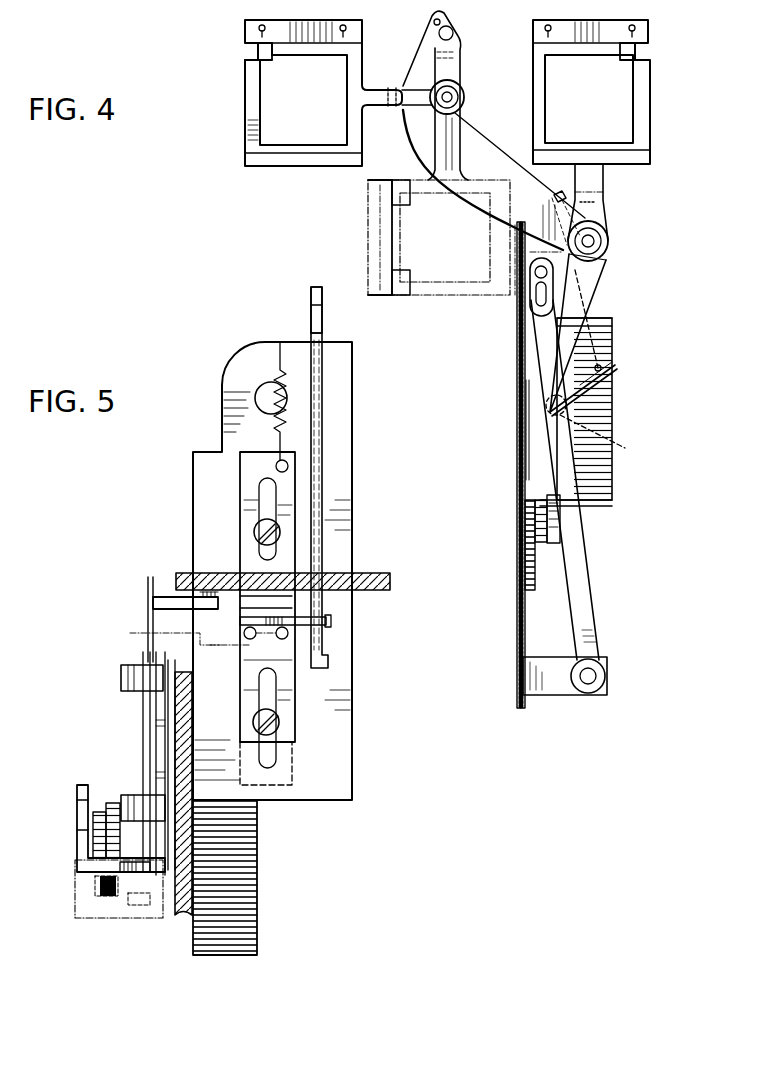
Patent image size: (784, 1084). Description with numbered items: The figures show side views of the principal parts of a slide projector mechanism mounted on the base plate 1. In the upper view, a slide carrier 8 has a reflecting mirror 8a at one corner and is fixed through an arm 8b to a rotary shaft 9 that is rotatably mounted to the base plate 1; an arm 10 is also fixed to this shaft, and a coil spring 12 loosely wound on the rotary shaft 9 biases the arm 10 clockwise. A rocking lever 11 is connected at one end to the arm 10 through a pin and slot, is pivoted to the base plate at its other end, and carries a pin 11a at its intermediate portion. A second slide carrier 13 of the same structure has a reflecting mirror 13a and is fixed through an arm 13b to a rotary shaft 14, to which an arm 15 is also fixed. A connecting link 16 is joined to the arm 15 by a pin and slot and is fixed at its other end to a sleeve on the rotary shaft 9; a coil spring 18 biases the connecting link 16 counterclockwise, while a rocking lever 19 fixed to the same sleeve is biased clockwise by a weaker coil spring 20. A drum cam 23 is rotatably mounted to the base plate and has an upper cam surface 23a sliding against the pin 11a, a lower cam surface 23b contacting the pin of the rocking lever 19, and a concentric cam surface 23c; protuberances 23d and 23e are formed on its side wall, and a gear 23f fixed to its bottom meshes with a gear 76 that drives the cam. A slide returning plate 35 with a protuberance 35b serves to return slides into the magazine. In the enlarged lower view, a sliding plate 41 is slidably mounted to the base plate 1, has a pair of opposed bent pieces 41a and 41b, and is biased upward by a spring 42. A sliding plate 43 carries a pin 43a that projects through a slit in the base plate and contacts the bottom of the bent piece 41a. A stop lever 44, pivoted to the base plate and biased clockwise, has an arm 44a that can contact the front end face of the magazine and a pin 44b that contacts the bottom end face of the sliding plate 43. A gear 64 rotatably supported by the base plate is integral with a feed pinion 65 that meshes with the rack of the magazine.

In FIG. 4, the base plate 1 is at (516, 655).
In FIG. 5, the base plate 1 is at (345, 418).
In FIG. 4, the slide carrier 8 is at (640, 125).
In FIG. 4, the reflecting mirror 8a is at (636, 50).
In FIG. 4, the arm 8b is at (600, 224).
In FIG. 4, the rotary shaft 9 is at (602, 240).
In FIG. 4, the arm 10 is at (560, 330).
In FIG. 4, the rocking lever 11 is at (580, 530).
In FIG. 4, the pin 11a is at (600, 445).
In FIG. 4, the coil spring 12 is at (556, 270).
In FIG. 4, the slide carrier 13 is at (250, 80).
In FIG. 4, the reflecting mirror 13a is at (257, 50).
In FIG. 4, the arm 13b is at (394, 106).
In FIG. 4, the rotary shaft 14 is at (462, 100).
In FIG. 4, the arm 15 is at (458, 58).
In FIG. 4, the connecting link 16 is at (452, 130).
In FIG. 4, the coil spring 18 is at (561, 205).
In FIG. 4, the rocking lever 19 is at (612, 318).
In FIG. 4, the coil spring 20 is at (602, 284).
In FIG. 4, the drum cam 23 is at (588, 404).
In FIG. 4, the upper cam surface 23a is at (612, 372).
In FIG. 4, the lower cam surface 23b is at (556, 545).
In FIG. 4, the cam surface 23c is at (615, 430).
In FIG. 4, the protuberance 23d is at (533, 540).
In FIG. 4, the protuberance 23e is at (534, 522).
In FIG. 4, the gear 23f is at (525, 418).
In FIG. 4, the gear 76 is at (520, 580).
In FIG. 5, the slide returning plate 35 is at (322, 565).
In FIG. 5, the protuberance 35b is at (322, 306).
In FIG. 5, the sliding plate 41 is at (250, 470).
In FIG. 5, the bent piece 41a is at (235, 598).
In FIG. 5, the bent piece 41b is at (332, 620).
In FIG. 5, the spring 42 is at (280, 372).
In FIG. 5, the sliding plate 43 is at (147, 603).
In FIG. 5, the pin 43a is at (165, 597).
In FIG. 5, the stop lever 44 is at (158, 738).
In FIG. 5, the arm 44a is at (78, 790).
In FIG. 5, the pin 44b is at (140, 872).
In FIG. 5, the gear 64 is at (226, 955).
In FIG. 5, the feed pinion 65 is at (100, 902).